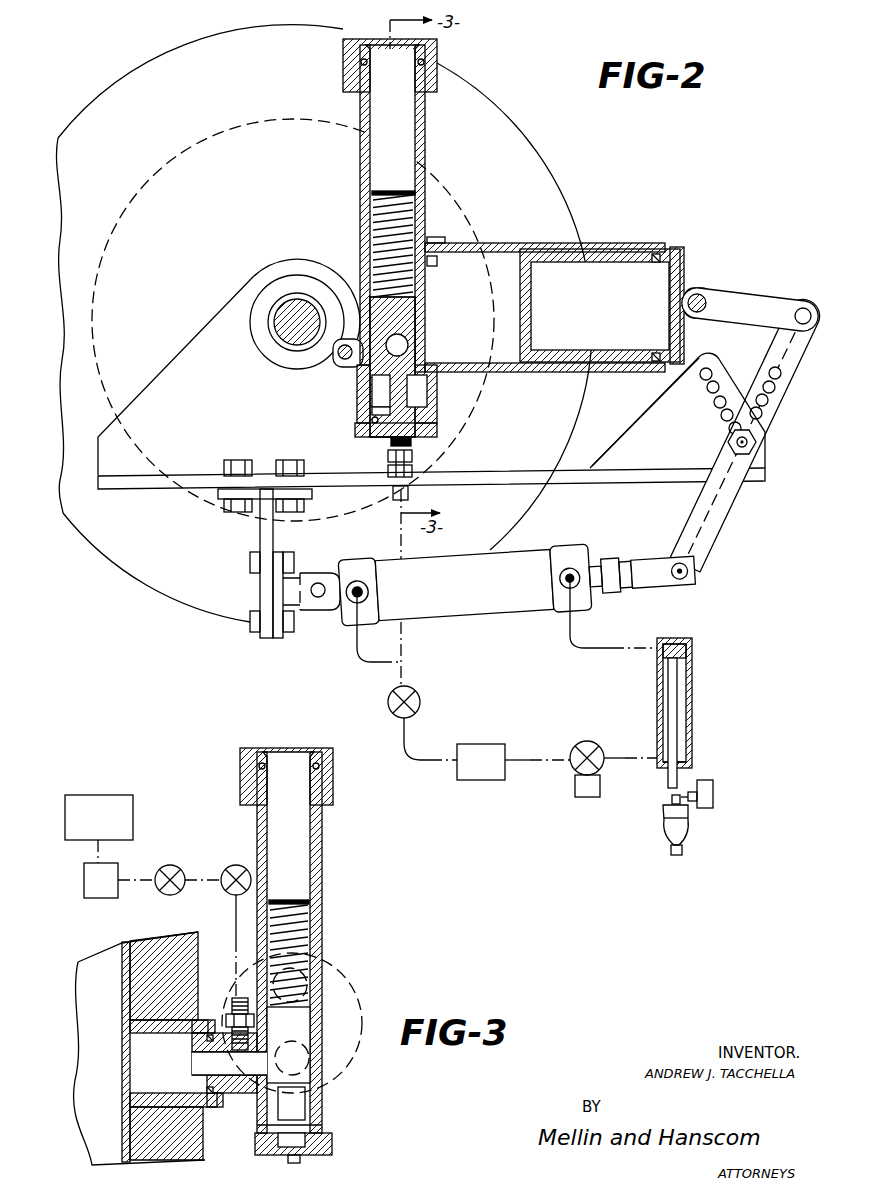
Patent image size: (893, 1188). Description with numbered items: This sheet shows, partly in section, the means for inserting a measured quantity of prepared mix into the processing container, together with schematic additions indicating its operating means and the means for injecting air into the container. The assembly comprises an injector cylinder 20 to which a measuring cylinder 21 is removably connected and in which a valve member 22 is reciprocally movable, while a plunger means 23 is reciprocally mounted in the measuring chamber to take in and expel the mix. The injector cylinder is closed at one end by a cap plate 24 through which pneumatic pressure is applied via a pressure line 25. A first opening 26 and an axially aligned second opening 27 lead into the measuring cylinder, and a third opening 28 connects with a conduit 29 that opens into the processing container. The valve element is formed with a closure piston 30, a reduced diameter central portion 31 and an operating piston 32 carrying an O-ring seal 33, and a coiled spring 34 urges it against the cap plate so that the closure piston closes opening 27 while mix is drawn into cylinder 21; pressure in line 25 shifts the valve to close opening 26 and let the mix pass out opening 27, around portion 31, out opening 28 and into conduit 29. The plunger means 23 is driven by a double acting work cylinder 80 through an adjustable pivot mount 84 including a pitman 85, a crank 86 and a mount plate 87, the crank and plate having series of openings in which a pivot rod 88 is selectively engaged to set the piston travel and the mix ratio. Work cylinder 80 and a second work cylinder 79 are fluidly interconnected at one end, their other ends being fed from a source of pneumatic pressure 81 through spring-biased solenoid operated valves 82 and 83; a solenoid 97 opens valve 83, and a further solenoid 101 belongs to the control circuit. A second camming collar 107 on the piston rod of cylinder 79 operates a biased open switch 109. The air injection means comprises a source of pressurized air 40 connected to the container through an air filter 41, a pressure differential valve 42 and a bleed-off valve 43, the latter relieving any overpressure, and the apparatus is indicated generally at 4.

In FIG. 2, the injector cylinder 20 is at (421, 158).
In FIG. 2, the coiled spring 34 is at (416, 203).
In FIG. 2, the measuring cylinder 21 is at (492, 246).
In FIG. 2, the plunger means 23 is at (682, 260).
In FIG. 2, the pitman 85 is at (752, 302).
In FIG. 2, the third opening 28 is at (357, 288).
In FIG. 3, the third opening 28 is at (262, 1078).
In FIG. 2, the first opening 26 is at (434, 262).
In FIG. 2, the second opening 27 is at (428, 335).
In FIG. 3, the second opening 27 is at (312, 1066).
In FIG. 2, the closure piston 30 is at (428, 346).
In FIG. 2, the crank 86 is at (778, 357).
In FIG. 2, the mount plate 87 is at (652, 412).
In FIG. 2, the valve member 22 is at (385, 386).
In FIG. 2, the reduced diameter central portion 31 is at (418, 395).
In FIG. 2, the operating piston 32 is at (385, 408).
In FIG. 2, the pivot rod 88 is at (737, 442).
In FIG. 2, the adjustable pivot mount 84 is at (772, 446).
In FIG. 2, the cap plate 24 is at (430, 438).
In FIG. 2, the O-ring seal 33 is at (386, 443).
In FIG. 2, the pressure line 25 is at (410, 493).
In FIG. 2, the work cylinder 80 is at (518, 613).
In FIG. 2, the solenoid 97 is at (375, 693).
In FIG. 2, the solenoid operated valve 82 is at (421, 700).
In FIG. 2, the solenoid operated valve 83 is at (590, 747).
In FIG. 2, the work cylinder 79 is at (695, 738).
In FIG. 2, the source of pneumatic pressure 81 is at (478, 782).
In FIG. 2, the biased open switch 109 is at (714, 793).
In FIG. 2, the solenoid 101 is at (586, 800).
In FIG. 2, the second camming collar 107 is at (690, 830).
In FIG. 3, the source of pressurized air 40 is at (85, 796).
In FIG. 3, the apparatus 4 is at (134, 799).
In FIG. 3, the pressure differential valve 42 is at (164, 866).
In FIG. 3, the bleed-off valve 43 is at (213, 868).
In FIG. 3, the air filter 41 is at (100, 898).
In FIG. 3, the conduit 29 is at (236, 1102).